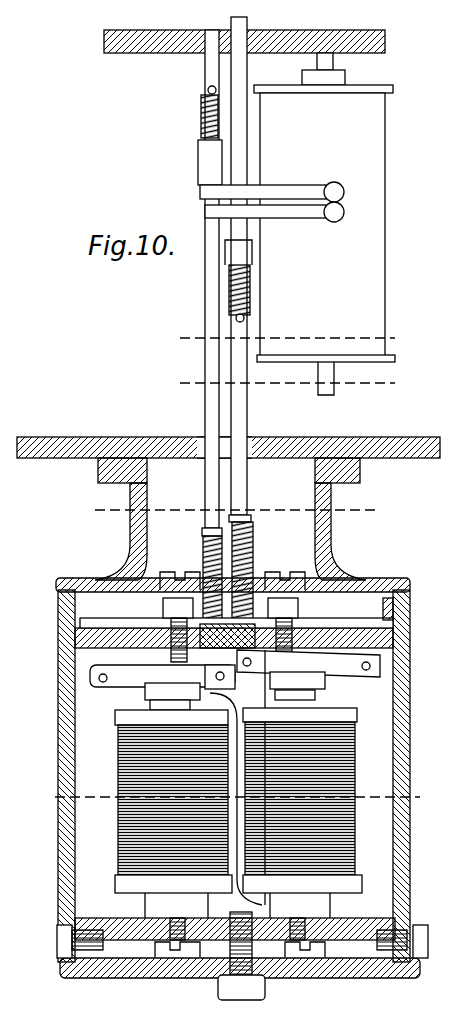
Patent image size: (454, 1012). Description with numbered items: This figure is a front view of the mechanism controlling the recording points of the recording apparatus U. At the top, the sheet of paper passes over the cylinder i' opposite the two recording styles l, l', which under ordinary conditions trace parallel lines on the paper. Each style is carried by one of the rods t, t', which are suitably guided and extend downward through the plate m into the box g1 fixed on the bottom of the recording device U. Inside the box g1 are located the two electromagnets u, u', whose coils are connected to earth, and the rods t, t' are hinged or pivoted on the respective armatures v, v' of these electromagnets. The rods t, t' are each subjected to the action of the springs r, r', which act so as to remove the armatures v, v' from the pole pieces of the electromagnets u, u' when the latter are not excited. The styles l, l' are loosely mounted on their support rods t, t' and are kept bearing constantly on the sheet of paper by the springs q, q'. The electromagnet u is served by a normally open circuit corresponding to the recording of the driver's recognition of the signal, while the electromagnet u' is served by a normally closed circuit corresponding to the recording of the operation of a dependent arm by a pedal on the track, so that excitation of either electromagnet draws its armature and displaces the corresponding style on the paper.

The recording apparatus U is at (244, 85).
The plate m is at (453, 538).
The cylinder i' is at (324, 224).
The rod t' is at (197, 283).
The rod t is at (247, 269).
The spring q' is at (197, 135).
The spring q is at (253, 281).
The recording style l' is at (272, 183).
The recording style l is at (274, 228).
The spring r' is at (199, 581).
The spring r is at (252, 574).
The box g1 is at (410, 696).
The armature v' is at (162, 687).
The armature v is at (308, 675).
The electromagnet u' is at (158, 814).
The electromagnet u is at (308, 813).